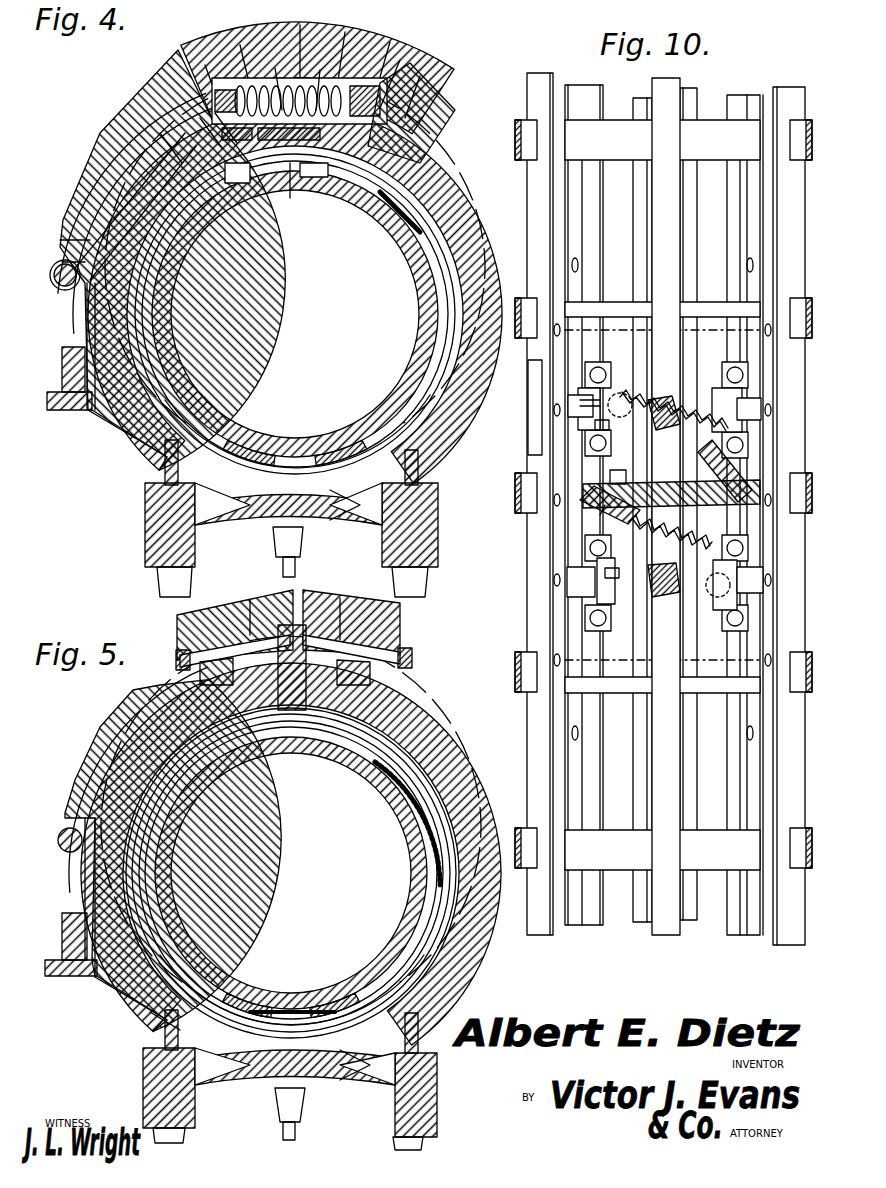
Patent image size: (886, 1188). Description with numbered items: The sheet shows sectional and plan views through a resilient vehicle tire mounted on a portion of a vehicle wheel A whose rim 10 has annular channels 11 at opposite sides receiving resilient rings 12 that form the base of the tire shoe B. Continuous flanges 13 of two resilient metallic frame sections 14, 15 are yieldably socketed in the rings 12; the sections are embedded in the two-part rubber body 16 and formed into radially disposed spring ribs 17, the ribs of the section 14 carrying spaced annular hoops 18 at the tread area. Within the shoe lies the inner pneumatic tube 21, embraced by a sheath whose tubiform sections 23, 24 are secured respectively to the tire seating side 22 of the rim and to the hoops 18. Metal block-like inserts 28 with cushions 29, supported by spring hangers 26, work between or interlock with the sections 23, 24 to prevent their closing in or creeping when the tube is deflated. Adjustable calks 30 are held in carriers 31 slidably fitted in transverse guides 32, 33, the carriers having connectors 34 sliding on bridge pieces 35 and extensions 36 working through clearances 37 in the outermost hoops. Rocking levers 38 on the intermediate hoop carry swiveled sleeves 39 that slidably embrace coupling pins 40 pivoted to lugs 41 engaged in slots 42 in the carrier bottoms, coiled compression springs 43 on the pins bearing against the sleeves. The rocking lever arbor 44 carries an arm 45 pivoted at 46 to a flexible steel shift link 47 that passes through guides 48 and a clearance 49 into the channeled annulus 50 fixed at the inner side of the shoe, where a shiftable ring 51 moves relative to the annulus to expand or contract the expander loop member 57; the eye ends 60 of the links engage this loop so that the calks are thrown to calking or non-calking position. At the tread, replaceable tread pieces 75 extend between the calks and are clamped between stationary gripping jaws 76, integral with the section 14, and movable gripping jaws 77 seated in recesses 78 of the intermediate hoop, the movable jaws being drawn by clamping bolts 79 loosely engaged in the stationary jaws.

In FIG. 4, the rim 10 is at (300, 502).
In FIG. 5, the rim 10 is at (262, 1090).
In FIG. 4, the annular channels 11 is at (158, 586).
In FIG. 5, the annular channels 11 is at (152, 1132).
In FIG. 4, the resilient rings 12 is at (144, 522).
In FIG. 5, the resilient rings 12 is at (142, 1080).
In FIG. 4, the continuous flanges 13 is at (164, 472).
In FIG. 5, the continuous flanges 13 is at (164, 1040).
In FIG. 4, the resilient metallic frame section 14 is at (150, 447).
In FIG. 5, the resilient metallic frame section 14 is at (122, 992).
In FIG. 4, the resilient metallic frame section 15 is at (437, 456).
In FIG. 5, the resilient metallic frame section 15 is at (482, 976).
In FIG. 4, the rubber body 16 is at (162, 270).
In FIG. 5, the rubber body 16 is at (122, 742).
In FIG. 4, the spring ribs 17 is at (92, 192).
In FIG. 5, the spring ribs 17 is at (108, 792).
In FIG. 10, the spring ribs 17 is at (620, 162).
In FIG. 4, the annular hoops 18 is at (195, 238).
In FIG. 5, the annular hoops 18 is at (250, 732).
In FIG. 10, the annular hoops 18 is at (540, 82).
In FIG. 4, the inner pneumatic tube 21 is at (170, 300).
In FIG. 5, the tire seating side 22 is at (280, 1010).
In FIG. 4, the tubiform section 23 is at (406, 256).
In FIG. 5, the tubiform section 23 is at (165, 1030).
In FIG. 5, the tubiform section 24 is at (260, 800).
In FIG. 5, the spring hangers 26 is at (418, 812).
In FIG. 5, the metal block-like inserts 28 is at (298, 760).
In FIG. 5, the cushions 29 is at (322, 760).
In FIG. 4, the adjustable calks 30 is at (422, 74).
In FIG. 4, the carriers 31 is at (357, 60).
In FIG. 10, the guide 32 is at (755, 492).
In FIG. 10, the guide 33 is at (706, 320).
In FIG. 4, the connectors 34 is at (218, 66).
In FIG. 10, the connectors 34 is at (612, 385).
In FIG. 4, the bridge pieces 35 is at (237, 186).
In FIG. 10, the bridge pieces 35 is at (690, 420).
In FIG. 4, the extensions 36 is at (203, 120).
In FIG. 10, the extensions 36 is at (582, 402).
In FIG. 4, the clearances 37 is at (166, 140).
In FIG. 10, the clearances 37 is at (560, 370).
In FIG. 10, the rocking levers 38 is at (610, 492).
In FIG. 4, the swiveled sleeves 39 is at (402, 58).
In FIG. 10, the swiveled sleeves 39 is at (600, 516).
In FIG. 4, the coupling pins 40 is at (422, 108).
In FIG. 10, the coupling pins 40 is at (720, 470).
In FIG. 4, the lugs 41 is at (240, 66).
In FIG. 10, the lugs 41 is at (636, 402).
In FIG. 4, the slots 42 is at (280, 66).
In FIG. 10, the slots 42 is at (596, 430).
In FIG. 4, the coiled compression springs 43 is at (322, 66).
In FIG. 10, the coiled compression springs 43 is at (690, 408).
In FIG. 10, the rocking lever arbor 44 is at (690, 508).
In FIG. 4, the arm 45 is at (303, 126).
In FIG. 4, the pivot 46 is at (314, 180).
In FIG. 4, the flexible steel shift link 47 is at (166, 216).
In FIG. 4, the guides 48 is at (288, 200).
In FIG. 4, the clearance 49 is at (74, 236).
In FIG. 4, the channeled annulus 50 is at (68, 262).
In FIG. 5, the channeled annulus 50 is at (85, 882).
In FIG. 4, the shiftable ring 51 is at (86, 412).
In FIG. 5, the shiftable ring 51 is at (62, 930).
In FIG. 4, the expander loop member 57 is at (65, 290).
In FIG. 5, the expander loop member 57 is at (68, 828).
In FIG. 4, the eye ends 60 is at (72, 350).
In FIG. 5, the replaceable tread pieces 75 is at (230, 612).
In FIG. 5, the stationary gripping jaws 76 is at (180, 625).
In FIG. 10, the stationary gripping jaws 76 is at (585, 100).
In FIG. 4, the movable gripping jaws 77 is at (306, 545).
In FIG. 5, the movable gripping jaws 77 is at (252, 606).
In FIG. 5, the recesses 78 is at (310, 636).
In FIG. 5, the clamping bolts 79 is at (200, 668).
In FIG. 4, the vehicle wheel portion A is at (355, 500).
In FIG. 5, the vehicle wheel portion A is at (355, 1080).
In FIG. 4, the shoe B is at (112, 165).
In FIG. 5, the shoe B is at (470, 792).